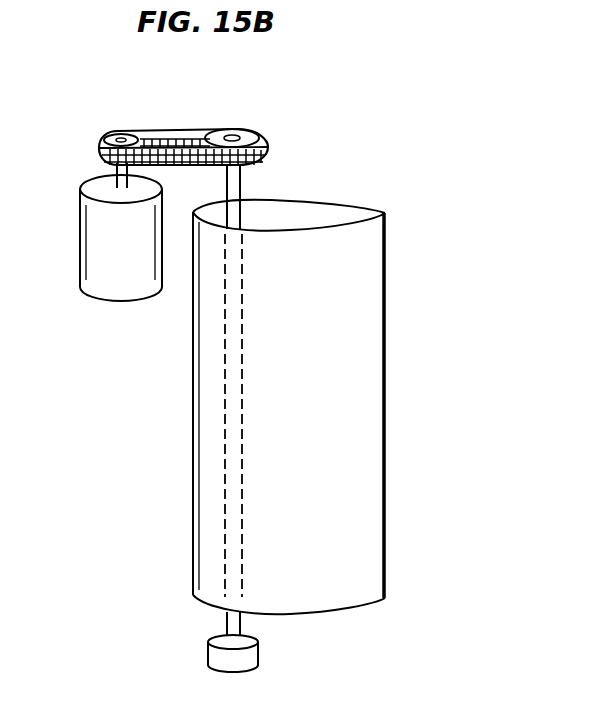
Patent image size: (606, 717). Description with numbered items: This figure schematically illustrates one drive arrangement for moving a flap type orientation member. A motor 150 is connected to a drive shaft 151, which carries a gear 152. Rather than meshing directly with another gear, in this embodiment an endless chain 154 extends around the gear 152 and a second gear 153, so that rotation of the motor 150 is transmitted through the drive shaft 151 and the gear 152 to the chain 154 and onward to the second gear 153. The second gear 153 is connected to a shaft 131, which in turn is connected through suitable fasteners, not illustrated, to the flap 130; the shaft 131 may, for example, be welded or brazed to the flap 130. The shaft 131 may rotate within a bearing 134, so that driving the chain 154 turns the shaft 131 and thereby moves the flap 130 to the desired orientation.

The flap 130 is at (358, 388).
The shaft 131 is at (247, 180).
The bearing 134 is at (258, 655).
The motor 150 is at (105, 285).
The drive shaft 151 is at (108, 177).
The gear 152 is at (113, 132).
The second gear 153 is at (257, 128).
The endless chain 154 is at (180, 130).